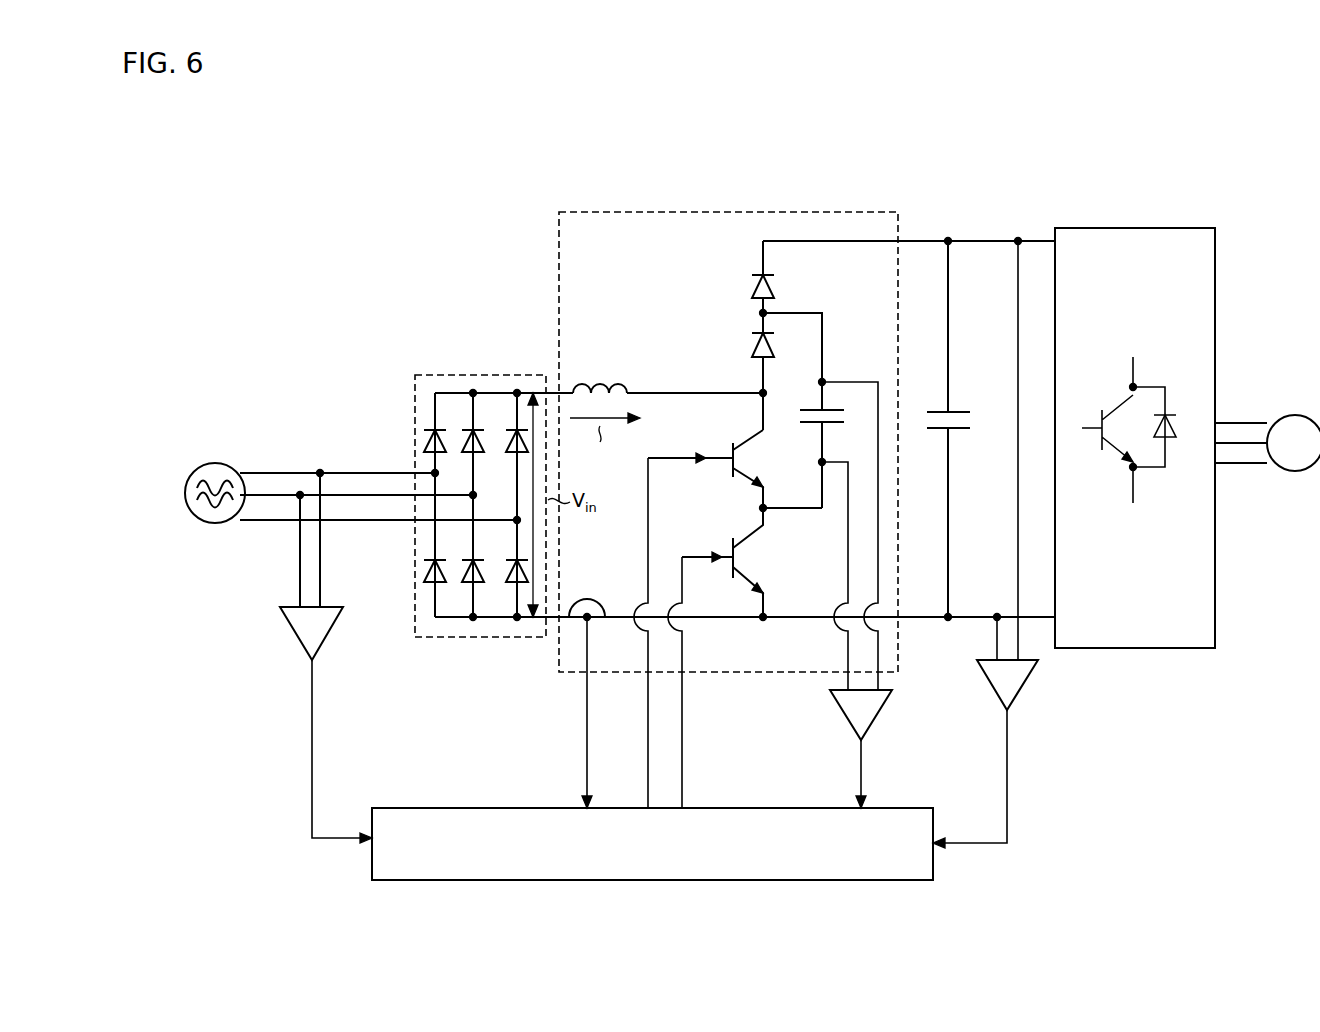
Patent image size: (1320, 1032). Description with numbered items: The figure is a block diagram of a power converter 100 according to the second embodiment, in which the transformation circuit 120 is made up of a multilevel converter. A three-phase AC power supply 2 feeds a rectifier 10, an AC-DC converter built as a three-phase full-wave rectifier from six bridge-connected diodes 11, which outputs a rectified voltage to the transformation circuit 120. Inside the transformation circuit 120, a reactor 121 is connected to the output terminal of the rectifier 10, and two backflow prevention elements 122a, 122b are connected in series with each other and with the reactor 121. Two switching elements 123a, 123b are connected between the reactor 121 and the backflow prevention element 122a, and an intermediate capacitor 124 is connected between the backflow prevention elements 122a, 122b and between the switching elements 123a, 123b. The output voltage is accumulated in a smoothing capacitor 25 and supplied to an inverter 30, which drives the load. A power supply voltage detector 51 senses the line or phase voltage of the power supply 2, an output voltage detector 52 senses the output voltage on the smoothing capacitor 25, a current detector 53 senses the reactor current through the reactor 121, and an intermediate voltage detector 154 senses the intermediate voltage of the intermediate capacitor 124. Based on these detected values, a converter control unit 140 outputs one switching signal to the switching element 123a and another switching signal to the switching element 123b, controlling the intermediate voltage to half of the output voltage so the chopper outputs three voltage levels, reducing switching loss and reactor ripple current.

The three-phase AC power supply 2 is at (218, 463).
The rectifier 10 is at (712, 482).
The diode 11 is at (423, 442).
The smoothing capacitor 25 is at (962, 432).
The inverter 30 is at (1135, 228).
The power supply voltage detector 51 is at (330, 638).
The output voltage detector 52 is at (1022, 690).
The current detector 53 is at (601, 600).
The power converter 100 is at (675, 172).
The transformation circuit 120 is at (812, 394).
The reactor 121 is at (593, 382).
The backflow prevention element 122a is at (755, 347).
The backflow prevention element 122b is at (755, 287).
The switching element 123a is at (722, 450).
The switching element 123b is at (722, 550).
The intermediate capacitor 124 is at (827, 406).
The converter control unit 140 is at (507, 808).
The intermediate voltage detector 154 is at (880, 720).